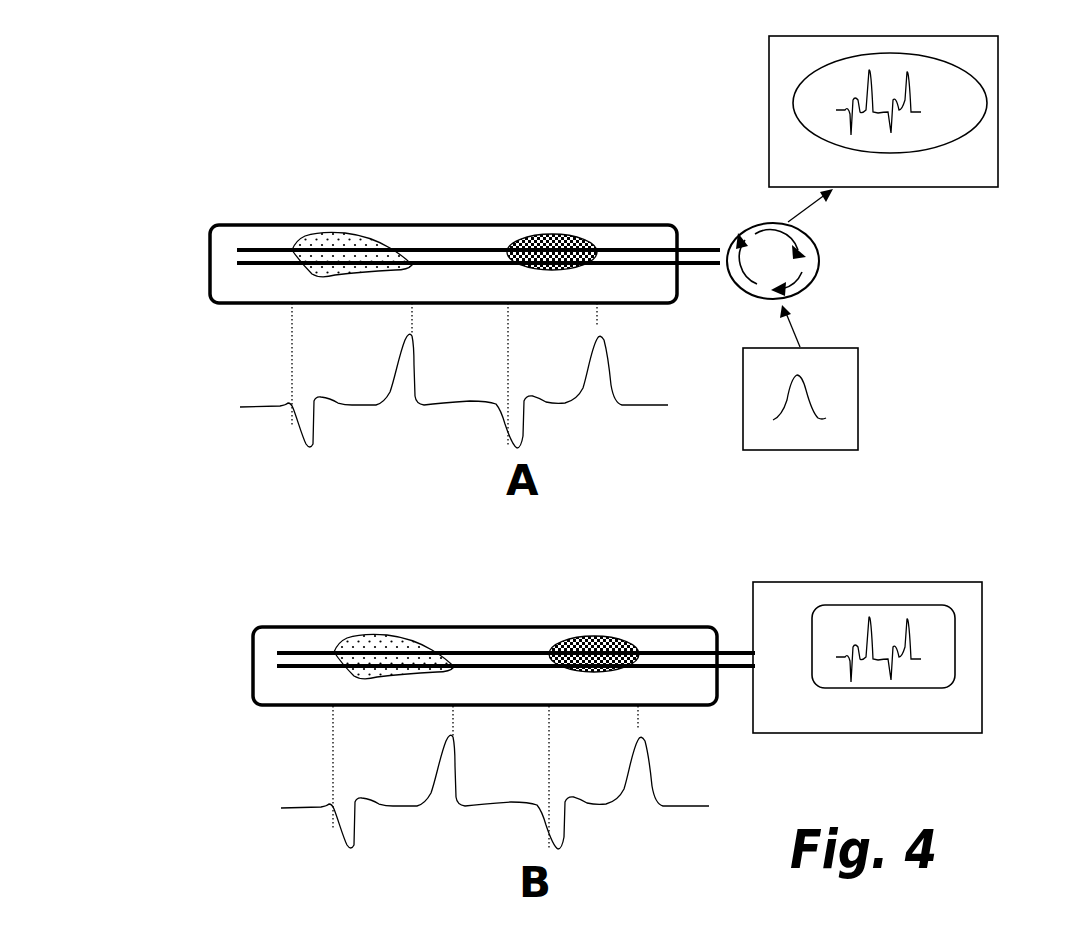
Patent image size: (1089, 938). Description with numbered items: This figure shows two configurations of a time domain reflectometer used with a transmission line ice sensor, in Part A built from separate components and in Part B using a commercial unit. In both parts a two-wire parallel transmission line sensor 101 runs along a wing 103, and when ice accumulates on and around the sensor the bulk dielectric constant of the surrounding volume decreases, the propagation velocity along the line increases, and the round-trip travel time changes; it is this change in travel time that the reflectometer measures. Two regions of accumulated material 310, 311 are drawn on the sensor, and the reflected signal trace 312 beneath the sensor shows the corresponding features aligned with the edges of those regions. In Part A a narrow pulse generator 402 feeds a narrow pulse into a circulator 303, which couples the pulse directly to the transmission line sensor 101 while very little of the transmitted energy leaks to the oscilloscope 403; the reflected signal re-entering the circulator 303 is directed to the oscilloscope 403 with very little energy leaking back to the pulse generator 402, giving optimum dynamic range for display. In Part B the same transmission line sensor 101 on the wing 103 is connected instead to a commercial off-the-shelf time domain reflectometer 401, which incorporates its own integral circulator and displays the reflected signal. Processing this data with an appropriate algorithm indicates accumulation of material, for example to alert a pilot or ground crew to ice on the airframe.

The two-wire parallel transmission line sensor 101 is at (700, 250).
The wing 103 is at (210, 247).
The circulator 303 is at (807, 262).
The second strain region (dense) 310 is at (520, 243).
The first strain region (sparse) 311 is at (330, 233).
The reflected signal waveform 312 is at (240, 407).
The commercial time domain reflectometer 401 is at (982, 615).
The narrow pulse generator 402 is at (858, 380).
The oscilloscope 403 is at (769, 97).